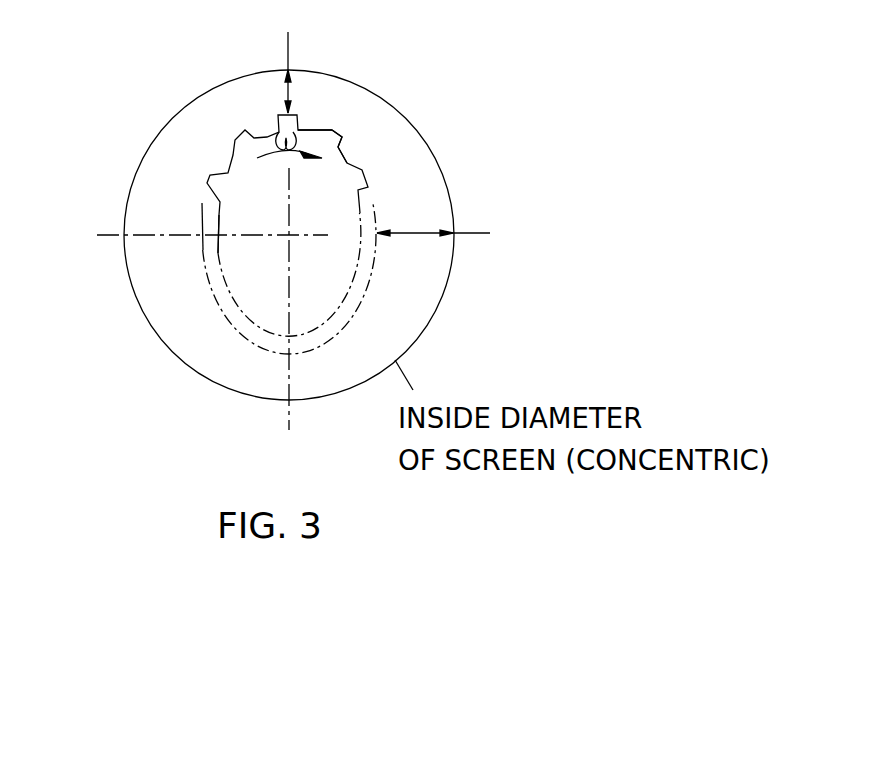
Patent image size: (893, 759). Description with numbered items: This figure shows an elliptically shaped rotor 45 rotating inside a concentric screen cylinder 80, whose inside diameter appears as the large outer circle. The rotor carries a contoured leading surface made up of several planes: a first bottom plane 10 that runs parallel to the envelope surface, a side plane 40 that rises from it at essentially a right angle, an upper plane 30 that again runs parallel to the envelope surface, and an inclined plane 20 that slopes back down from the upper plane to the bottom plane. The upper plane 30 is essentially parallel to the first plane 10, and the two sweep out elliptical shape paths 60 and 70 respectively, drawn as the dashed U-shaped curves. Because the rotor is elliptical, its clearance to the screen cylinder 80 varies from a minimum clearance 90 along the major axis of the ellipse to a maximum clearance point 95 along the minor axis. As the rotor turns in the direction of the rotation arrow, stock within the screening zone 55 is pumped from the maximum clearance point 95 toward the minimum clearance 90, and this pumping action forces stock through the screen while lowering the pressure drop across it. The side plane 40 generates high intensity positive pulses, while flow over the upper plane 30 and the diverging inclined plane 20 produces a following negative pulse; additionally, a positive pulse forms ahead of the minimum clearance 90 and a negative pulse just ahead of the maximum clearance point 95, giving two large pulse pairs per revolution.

The first bottom plane 10 is at (305, 128).
The inclined plane 20 is at (323, 128).
The upper plane 30 is at (337, 133).
The side plane 40 is at (343, 143).
The rotor 45 is at (216, 272).
The screening zone 55 is at (227, 312).
The elliptical path of upper plane 60 is at (202, 212).
The elliptical path of first plane 70 is at (217, 248).
The concentric screen cylinder 80 is at (337, 393).
The minimum clearance 90 is at (292, 56).
The maximum clearance point 95 is at (439, 215).